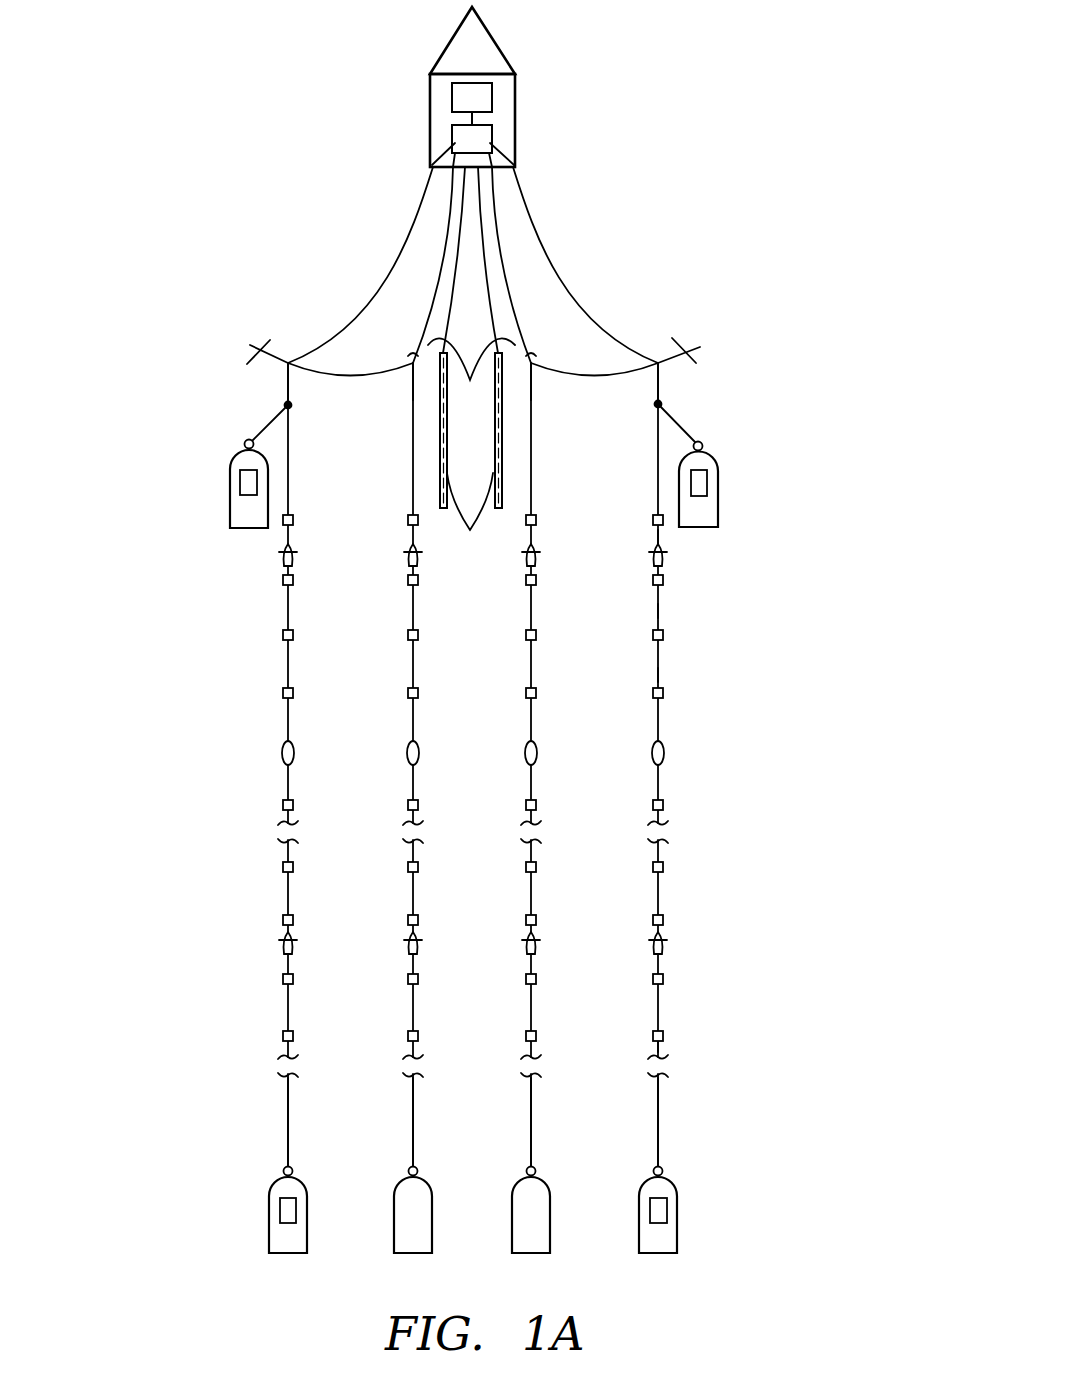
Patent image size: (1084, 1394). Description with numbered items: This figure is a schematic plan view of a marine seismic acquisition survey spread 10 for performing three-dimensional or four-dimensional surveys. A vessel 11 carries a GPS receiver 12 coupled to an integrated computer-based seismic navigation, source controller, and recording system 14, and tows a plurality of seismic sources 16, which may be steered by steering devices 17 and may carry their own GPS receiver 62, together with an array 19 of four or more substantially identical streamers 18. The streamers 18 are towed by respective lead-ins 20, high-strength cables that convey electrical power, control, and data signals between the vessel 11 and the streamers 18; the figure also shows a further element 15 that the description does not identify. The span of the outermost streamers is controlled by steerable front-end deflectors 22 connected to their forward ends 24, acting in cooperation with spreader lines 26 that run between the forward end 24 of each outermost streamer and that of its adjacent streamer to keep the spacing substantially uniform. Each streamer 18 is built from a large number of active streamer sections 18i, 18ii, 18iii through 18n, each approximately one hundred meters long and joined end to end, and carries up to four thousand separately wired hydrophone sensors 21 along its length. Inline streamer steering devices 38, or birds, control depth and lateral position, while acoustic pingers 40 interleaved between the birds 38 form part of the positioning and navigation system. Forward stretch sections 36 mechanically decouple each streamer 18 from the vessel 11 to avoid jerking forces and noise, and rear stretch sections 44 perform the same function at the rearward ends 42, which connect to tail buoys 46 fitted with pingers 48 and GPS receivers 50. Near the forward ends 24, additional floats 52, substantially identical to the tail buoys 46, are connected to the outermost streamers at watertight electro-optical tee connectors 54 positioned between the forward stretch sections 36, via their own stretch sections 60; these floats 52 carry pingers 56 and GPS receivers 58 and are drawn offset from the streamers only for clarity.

The marine seismic acquisition survey spread 10 is at (799, 115).
The vessel 11 is at (515, 117).
The GPS receiver 12 is at (492, 97).
The integrated computer-based seismic navigation, source controller, and recording s 14 is at (458, 133).
The lead-in cables 15 is at (535, 207).
The seismic sources 16 is at (470, 520).
The steering devices 17 is at (471, 423).
The streamers 18 is at (291, 655).
The active streamer section 18i is at (660, 537).
The active streamer section 18ii is at (660, 611).
The active streamer section 18iii is at (660, 675).
The active streamer section 18n is at (660, 1045).
The array of streamers 19 is at (158, 643).
The lead-ins 20 is at (408, 223).
The hydrophone sensors 21 is at (418, 695).
The steerable front-end deflectors 22 is at (255, 350).
The forward ends 24 is at (289, 384).
The spreader lines 26 is at (337, 373).
The forward stretch sections 36 is at (289, 450).
The streamer steering devices 38 is at (283, 556).
The acoustic emitters 40 is at (282, 750).
The rearward ends 42 is at (287, 1097).
The rear stretch sections 44 is at (289, 1140).
The tail buoys 46 is at (272, 1240).
The pingers 48 is at (283, 1168).
The GPS receivers 50 is at (282, 1210).
The buoys or floats 52 is at (232, 515).
The tee connectors 54 is at (284, 403).
The pingers 56 is at (245, 444).
The GPS receivers 58 is at (246, 482).
The stretch sections 60 is at (258, 427).
The GPS receiver 62 is at (422, 360).